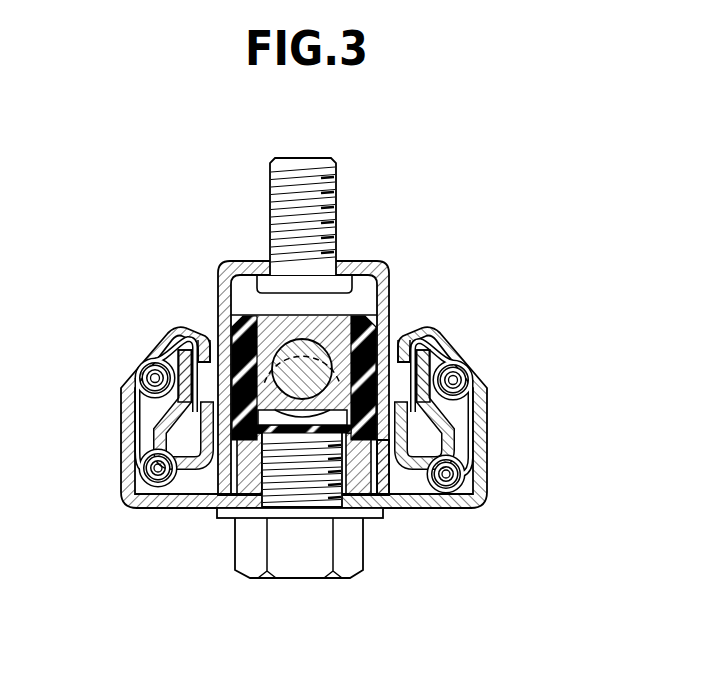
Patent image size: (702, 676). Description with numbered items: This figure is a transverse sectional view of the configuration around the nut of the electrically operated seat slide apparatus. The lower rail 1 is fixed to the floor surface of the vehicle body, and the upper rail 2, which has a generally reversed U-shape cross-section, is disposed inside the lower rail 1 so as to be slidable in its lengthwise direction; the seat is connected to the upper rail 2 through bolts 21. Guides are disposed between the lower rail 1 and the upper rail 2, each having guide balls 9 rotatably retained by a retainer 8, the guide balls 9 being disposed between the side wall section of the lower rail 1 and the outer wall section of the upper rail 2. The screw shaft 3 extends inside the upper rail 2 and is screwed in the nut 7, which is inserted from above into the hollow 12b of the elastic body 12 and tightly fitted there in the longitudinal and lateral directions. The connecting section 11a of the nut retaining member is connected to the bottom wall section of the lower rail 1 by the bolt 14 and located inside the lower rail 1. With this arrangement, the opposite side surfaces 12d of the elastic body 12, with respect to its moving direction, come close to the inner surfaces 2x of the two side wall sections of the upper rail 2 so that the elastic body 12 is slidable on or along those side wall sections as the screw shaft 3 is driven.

The lower rail 1 is at (121, 450).
The upper rail 2 is at (324, 372).
The inner surfaces of the side wall sections 2x is at (372, 445).
The screw shaft 3 is at (228, 300).
The nut 7 is at (338, 332).
The retainer 8 is at (478, 450).
The guide balls 9 is at (468, 366).
The connecting section 11a is at (240, 462).
The elastic body 12 is at (245, 304).
The hollow 12b is at (190, 378).
The opposite side surfaces 12d is at (176, 325).
The bolt 14 is at (340, 575).
The bolts 21 is at (289, 180).